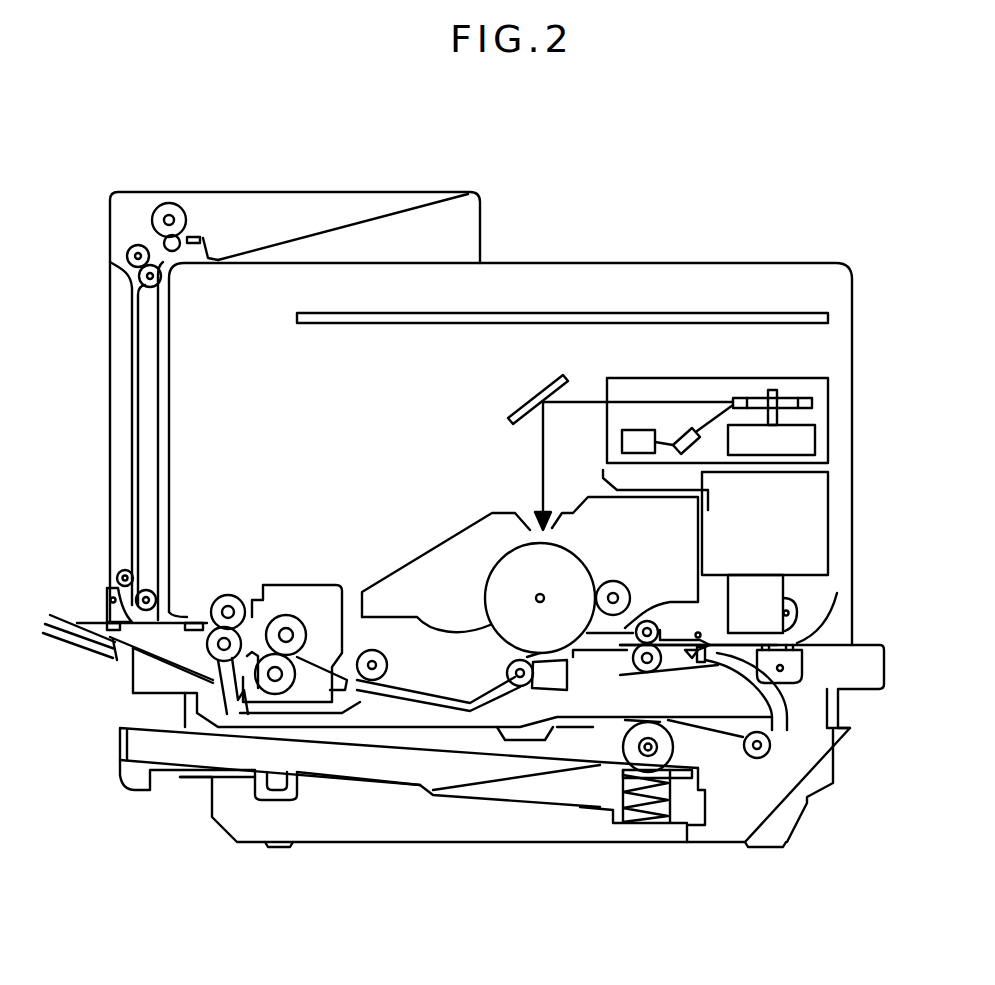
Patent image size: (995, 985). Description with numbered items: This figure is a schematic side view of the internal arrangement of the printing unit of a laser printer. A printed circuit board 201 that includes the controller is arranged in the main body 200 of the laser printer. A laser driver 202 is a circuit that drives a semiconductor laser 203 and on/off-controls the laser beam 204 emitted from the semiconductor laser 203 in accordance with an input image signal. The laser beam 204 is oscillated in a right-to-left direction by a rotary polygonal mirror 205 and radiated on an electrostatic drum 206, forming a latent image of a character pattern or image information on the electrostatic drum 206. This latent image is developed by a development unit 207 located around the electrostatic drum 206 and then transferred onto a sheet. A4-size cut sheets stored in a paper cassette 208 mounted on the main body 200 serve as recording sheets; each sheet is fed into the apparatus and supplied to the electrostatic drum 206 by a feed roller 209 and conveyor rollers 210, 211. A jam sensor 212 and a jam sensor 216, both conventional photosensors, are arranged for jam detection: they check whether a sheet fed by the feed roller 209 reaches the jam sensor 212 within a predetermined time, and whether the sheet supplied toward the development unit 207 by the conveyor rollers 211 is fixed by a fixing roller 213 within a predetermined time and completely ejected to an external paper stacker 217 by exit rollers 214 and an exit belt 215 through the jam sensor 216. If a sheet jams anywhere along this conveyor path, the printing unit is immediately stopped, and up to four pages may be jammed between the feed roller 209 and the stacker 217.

The main body 200 is at (598, 263).
The printed circuit board 201 is at (735, 313).
The laser driver 202 is at (622, 440).
The semiconductor laser 203 is at (695, 450).
The laser beam 204 is at (640, 402).
The rotary polygonal mirror 205 is at (812, 405).
The electrostatic drum 206 is at (498, 560).
The development unit 207 is at (395, 580).
The paper cassette 208 is at (112, 763).
The feed roller 209 is at (630, 748).
The conveyor roller 210 is at (747, 752).
The conveyor roller 211 is at (625, 673).
The jam sensor 212 is at (700, 660).
The fixing roller 213 is at (288, 615).
The exit rollers 214 is at (222, 605).
The exit belt 215 is at (132, 320).
The jam sensor 216 is at (205, 237).
The external paper stacker 217 is at (393, 208).